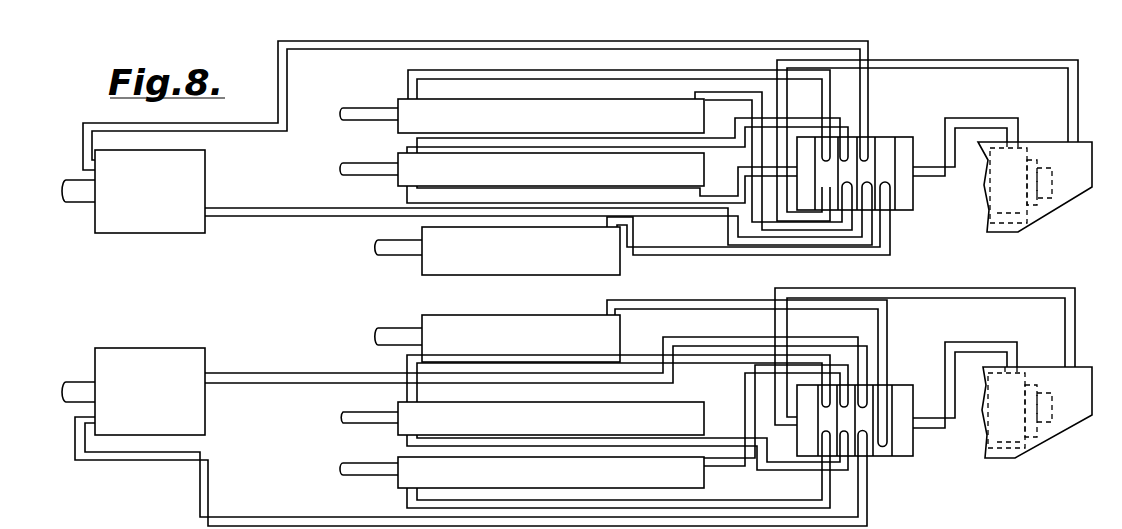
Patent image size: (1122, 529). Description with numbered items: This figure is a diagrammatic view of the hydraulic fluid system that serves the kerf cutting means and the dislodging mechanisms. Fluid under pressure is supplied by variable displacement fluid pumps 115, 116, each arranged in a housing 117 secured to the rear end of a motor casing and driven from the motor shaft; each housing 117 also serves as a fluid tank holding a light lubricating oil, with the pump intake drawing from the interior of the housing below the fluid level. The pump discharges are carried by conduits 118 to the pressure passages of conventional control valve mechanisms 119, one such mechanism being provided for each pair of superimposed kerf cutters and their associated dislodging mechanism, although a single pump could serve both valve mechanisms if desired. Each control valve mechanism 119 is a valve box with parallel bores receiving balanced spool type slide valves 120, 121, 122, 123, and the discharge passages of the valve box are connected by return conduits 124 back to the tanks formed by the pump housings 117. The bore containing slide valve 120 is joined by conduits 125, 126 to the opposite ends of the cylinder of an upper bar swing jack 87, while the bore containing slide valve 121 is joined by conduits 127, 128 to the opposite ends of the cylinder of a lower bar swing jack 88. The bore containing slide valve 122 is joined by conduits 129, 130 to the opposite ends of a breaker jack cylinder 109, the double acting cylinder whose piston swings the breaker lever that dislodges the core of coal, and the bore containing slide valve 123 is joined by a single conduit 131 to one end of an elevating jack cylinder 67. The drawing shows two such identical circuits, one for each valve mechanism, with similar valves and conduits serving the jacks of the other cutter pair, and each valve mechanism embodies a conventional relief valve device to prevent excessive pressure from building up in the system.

The elevating jack cylinder 67 is at (557, 270).
The upper bar swing jack 87 is at (570, 105).
The lower bar swing jack 88 is at (548, 177).
The double acting fluid jack cylinder 109 is at (207, 174).
The variable displacement fluid pump 115 is at (1017, 203).
The variable displacement fluid pump 116 is at (1015, 435).
The housing 117 is at (1072, 190).
The conduit 118 is at (983, 125).
The control valve mechanism 119 is at (903, 135).
The slide valve 120 is at (823, 177).
The slide valve 121 is at (845, 168).
The slide valve 122 is at (867, 172).
The slide valve 123 is at (885, 182).
The return conduit 124 is at (955, 63).
The conduit 125 is at (737, 75).
The conduit 126 is at (767, 157).
The conduit 127 is at (752, 117).
The conduit 128 is at (740, 198).
The conduit 129 is at (863, 52).
The conduit 130 is at (690, 211).
The conduit 131 is at (882, 238).